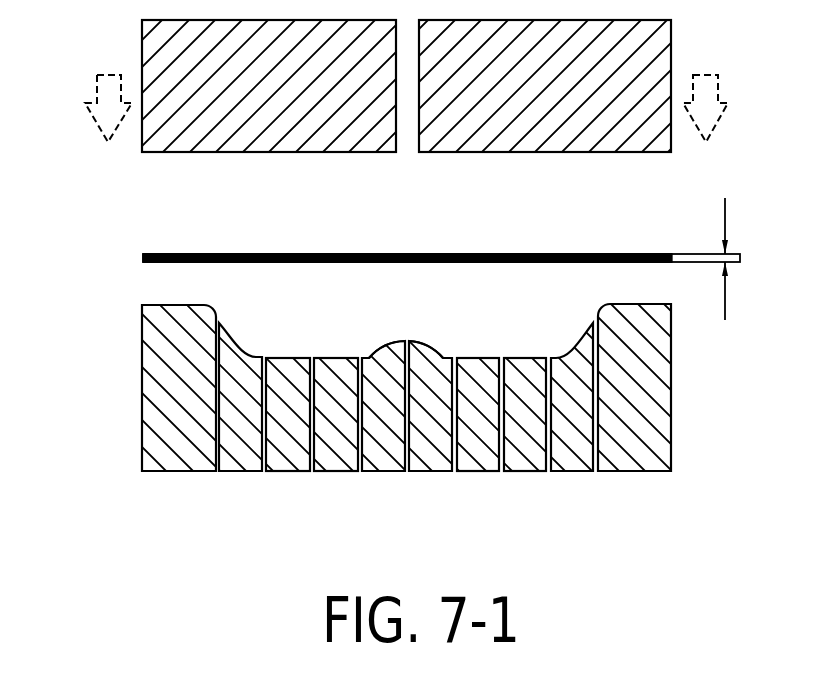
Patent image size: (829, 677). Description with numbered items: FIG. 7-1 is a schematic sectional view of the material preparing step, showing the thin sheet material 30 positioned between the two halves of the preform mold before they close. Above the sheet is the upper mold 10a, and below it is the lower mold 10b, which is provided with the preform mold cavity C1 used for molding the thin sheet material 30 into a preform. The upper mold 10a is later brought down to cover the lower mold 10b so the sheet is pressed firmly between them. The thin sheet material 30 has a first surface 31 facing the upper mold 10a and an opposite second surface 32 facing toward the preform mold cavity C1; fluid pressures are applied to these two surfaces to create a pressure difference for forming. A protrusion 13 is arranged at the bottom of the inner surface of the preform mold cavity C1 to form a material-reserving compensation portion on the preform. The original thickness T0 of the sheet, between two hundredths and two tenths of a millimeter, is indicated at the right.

The upper mold 10a is at (150, 133).
The lower mold 10b is at (168, 402).
The protrusion 13 is at (372, 348).
The preform mold cavity C1 is at (307, 339).
The thin sheet material 30 is at (143, 262).
The first surface 31 is at (567, 253).
The second surface 32 is at (521, 264).
The original thickness T0 is at (730, 275).